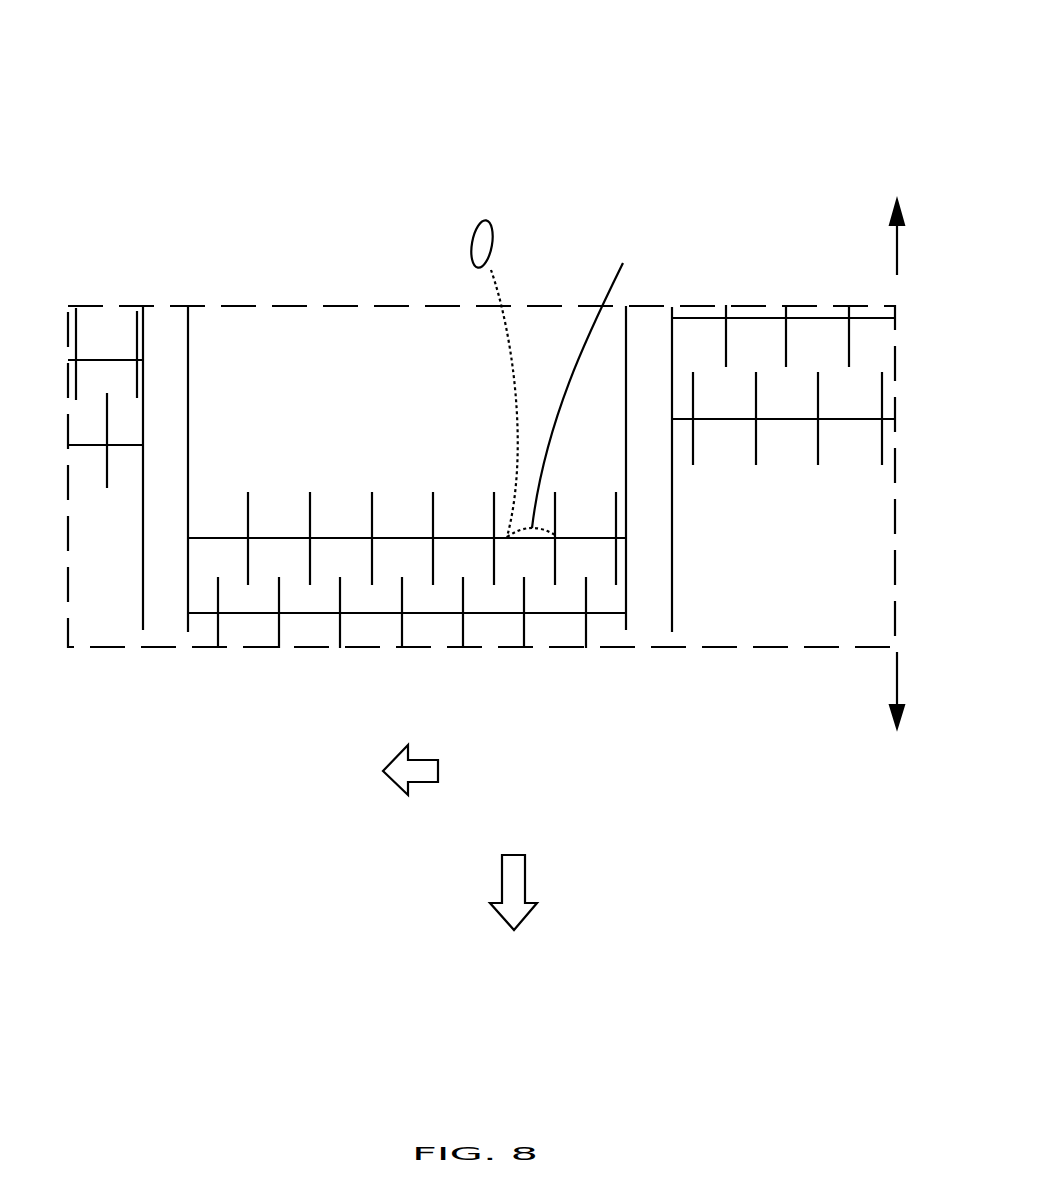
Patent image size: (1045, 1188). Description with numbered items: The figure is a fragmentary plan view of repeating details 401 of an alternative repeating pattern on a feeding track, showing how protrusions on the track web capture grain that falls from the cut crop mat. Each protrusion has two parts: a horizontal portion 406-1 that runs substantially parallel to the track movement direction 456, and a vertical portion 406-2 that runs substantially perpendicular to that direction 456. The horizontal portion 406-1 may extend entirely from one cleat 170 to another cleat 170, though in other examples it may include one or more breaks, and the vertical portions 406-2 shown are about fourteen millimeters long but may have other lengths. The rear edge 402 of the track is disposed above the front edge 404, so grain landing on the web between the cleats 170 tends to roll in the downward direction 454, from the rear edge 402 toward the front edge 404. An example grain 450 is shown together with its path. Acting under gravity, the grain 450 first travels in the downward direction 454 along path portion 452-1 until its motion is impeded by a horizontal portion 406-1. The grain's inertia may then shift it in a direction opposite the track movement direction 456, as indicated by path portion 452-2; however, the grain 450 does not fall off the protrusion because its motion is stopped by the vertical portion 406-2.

The electrode assembly 401 is at (432, 87).
The rear edge 402 is at (877, 237).
The front edge 404 is at (880, 690).
The horizontal portion 406-1 is at (337, 535).
The vertical portion 406-2 is at (432, 513).
The grain 450 is at (488, 230).
The path portion 452-1 is at (507, 315).
The path portion 452-2 is at (593, 383).
The downward direction 454 is at (517, 877).
The track movement direction 456 is at (430, 772).
The cleat 170 is at (165, 610).